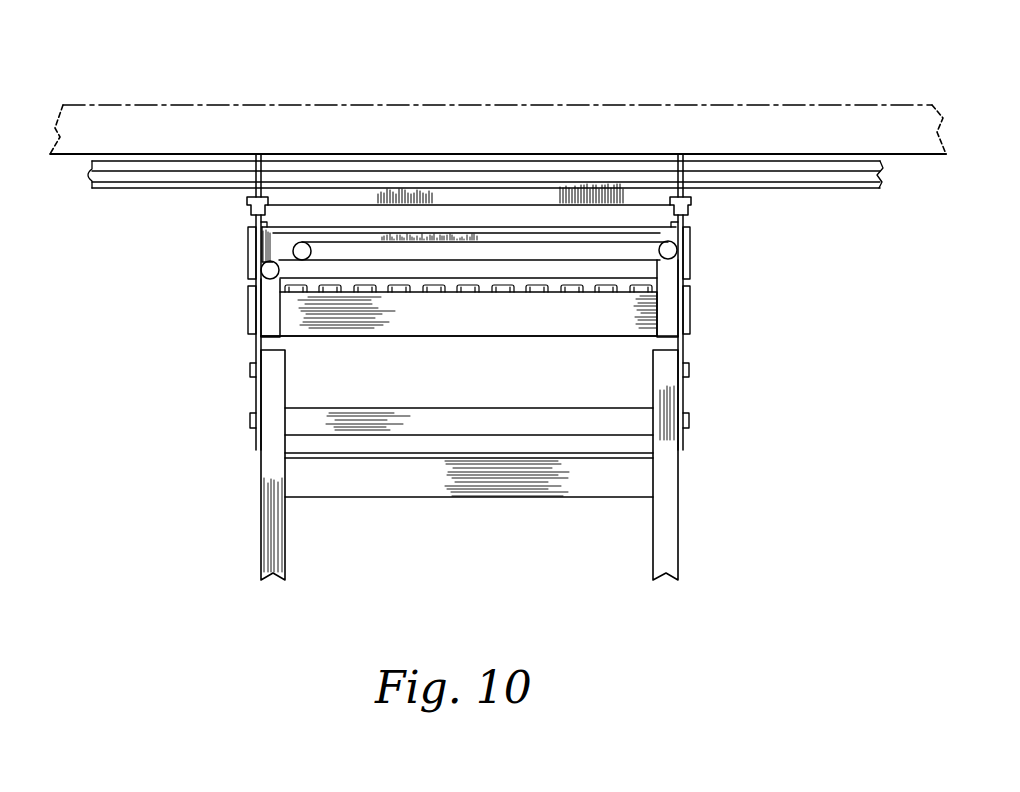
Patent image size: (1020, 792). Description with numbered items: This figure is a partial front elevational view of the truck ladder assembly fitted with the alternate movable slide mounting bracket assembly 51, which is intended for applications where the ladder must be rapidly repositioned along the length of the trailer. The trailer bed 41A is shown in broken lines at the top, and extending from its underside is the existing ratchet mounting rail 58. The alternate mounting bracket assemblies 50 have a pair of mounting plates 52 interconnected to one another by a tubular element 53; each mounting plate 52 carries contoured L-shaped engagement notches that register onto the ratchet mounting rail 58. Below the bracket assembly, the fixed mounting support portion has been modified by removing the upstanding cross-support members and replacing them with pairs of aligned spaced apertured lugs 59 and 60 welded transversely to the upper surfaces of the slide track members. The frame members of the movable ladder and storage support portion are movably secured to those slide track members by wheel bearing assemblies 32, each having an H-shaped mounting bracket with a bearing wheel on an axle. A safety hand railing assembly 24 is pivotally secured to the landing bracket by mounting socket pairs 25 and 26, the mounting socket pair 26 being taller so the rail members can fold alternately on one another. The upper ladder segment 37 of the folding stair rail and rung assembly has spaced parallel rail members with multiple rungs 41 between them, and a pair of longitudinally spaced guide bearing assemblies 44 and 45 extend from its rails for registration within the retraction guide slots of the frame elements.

The trailer bed 41A is at (275, 107).
The ratchet mounting rail 58 is at (158, 172).
The movable slide mounting bracket assembly 51 is at (702, 177).
The mounting plates 52 is at (694, 166).
The tubular element 53 is at (463, 205).
The apertured lugs 59 is at (248, 201).
The apertured lugs 60 is at (692, 200).
The wheel bearing assemblies 32 is at (692, 253).
The alternate mounting bracket assemblies 50 is at (725, 297).
The safety hand railing assembly 24 is at (537, 316).
The mounting socket pair 25 is at (272, 315).
The mounting socket pair 26 is at (672, 322).
The guide bearing assembly 44 is at (690, 369).
The guide bearing assembly 45 is at (690, 422).
The upper ladder segment 37 is at (680, 521).
The rungs 41 is at (565, 477).